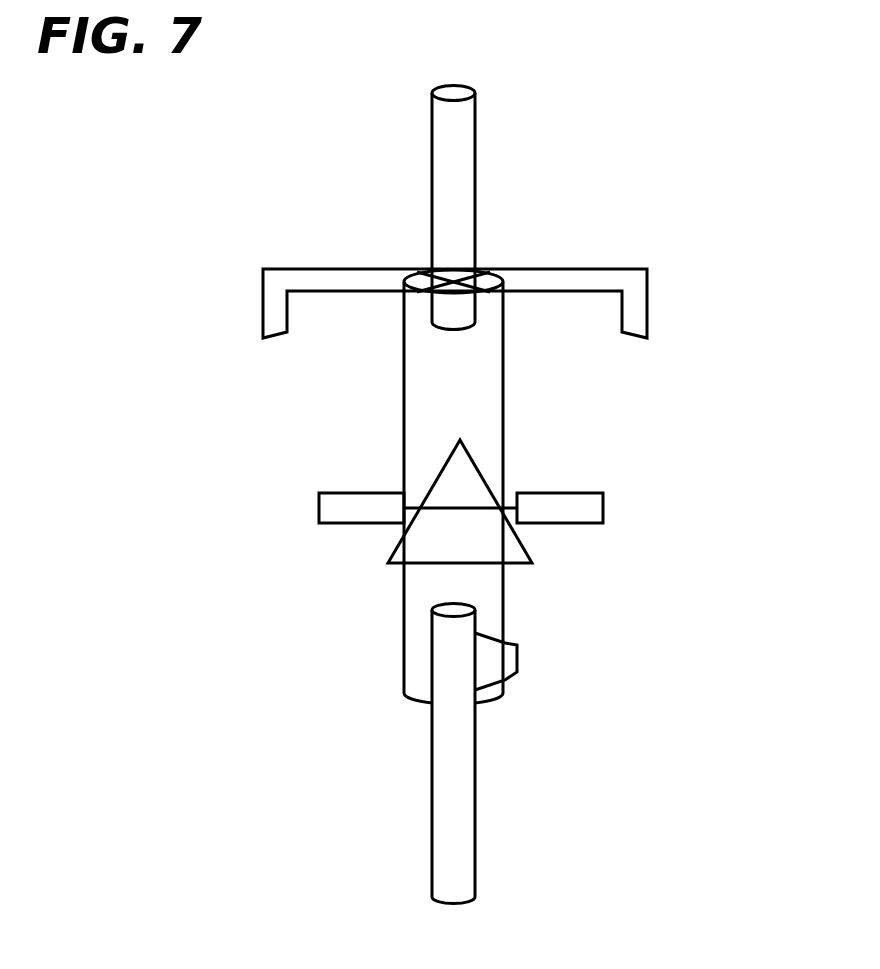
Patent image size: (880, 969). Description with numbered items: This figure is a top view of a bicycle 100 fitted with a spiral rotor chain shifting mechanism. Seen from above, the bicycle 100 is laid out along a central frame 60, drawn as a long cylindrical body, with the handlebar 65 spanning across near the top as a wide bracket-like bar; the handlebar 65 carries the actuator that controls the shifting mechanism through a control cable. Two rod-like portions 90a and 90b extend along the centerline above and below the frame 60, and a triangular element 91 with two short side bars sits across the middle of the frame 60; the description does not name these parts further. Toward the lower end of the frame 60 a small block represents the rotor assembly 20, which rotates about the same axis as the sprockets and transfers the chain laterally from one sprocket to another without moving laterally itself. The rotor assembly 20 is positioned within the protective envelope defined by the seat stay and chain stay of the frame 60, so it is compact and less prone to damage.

The bicycle 100 is at (648, 196).
The upper rod 90a is at (475, 138).
The handlebar 65 is at (322, 267).
The frame 60 is at (503, 381).
The cone member 91 is at (517, 563).
The rotor assembly 20 is at (518, 670).
The lower rod 90b is at (475, 807).